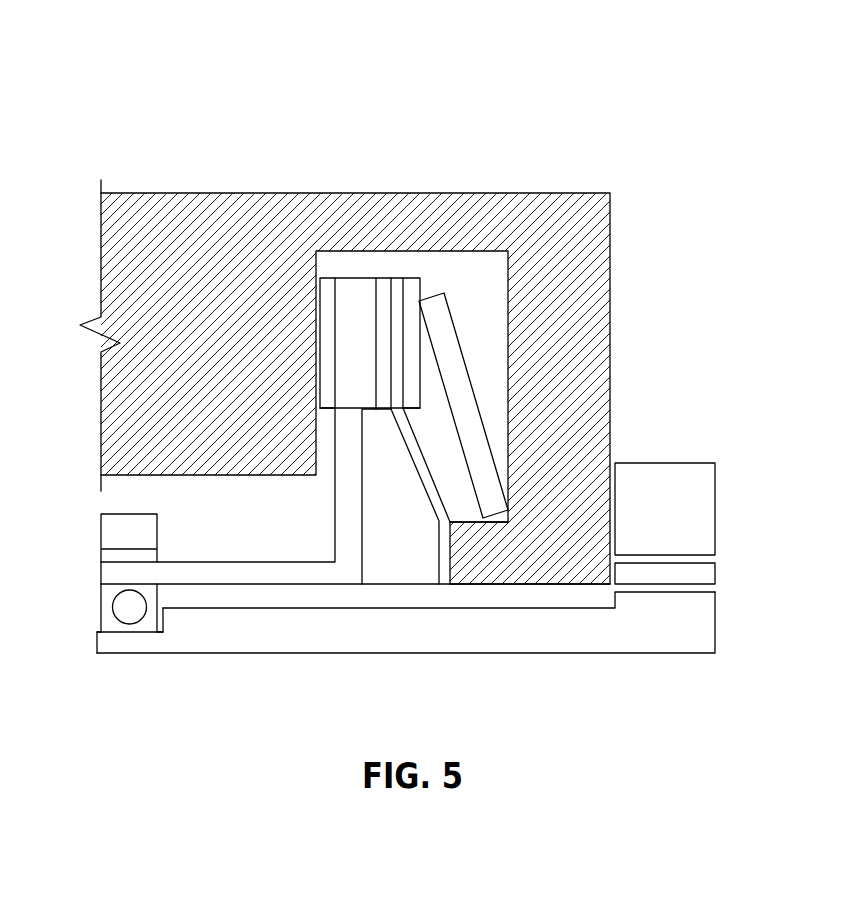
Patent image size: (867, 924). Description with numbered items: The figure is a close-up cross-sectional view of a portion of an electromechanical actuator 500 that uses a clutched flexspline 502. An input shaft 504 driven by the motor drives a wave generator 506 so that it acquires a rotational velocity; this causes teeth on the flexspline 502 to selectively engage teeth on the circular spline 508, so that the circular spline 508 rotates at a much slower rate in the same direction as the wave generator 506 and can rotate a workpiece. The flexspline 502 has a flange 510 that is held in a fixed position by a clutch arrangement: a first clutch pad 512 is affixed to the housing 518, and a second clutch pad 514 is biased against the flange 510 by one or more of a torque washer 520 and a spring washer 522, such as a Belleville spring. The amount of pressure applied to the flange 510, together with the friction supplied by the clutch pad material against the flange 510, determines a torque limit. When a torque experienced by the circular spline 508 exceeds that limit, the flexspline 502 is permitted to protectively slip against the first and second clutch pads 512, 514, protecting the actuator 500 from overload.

The electromechanical actuator 500 is at (408, 90).
The clutched flexspline 502 is at (203, 577).
The input shaft 504 is at (556, 643).
The wave generator 506 is at (124, 605).
The circular spline 508 is at (123, 532).
The flange 510 is at (362, 308).
The first clutch pad 512 is at (325, 287).
The second clutch pad 514 is at (383, 299).
The housing 518 is at (591, 233).
The torque washer 520 is at (435, 493).
The spring washer 522 is at (462, 392).